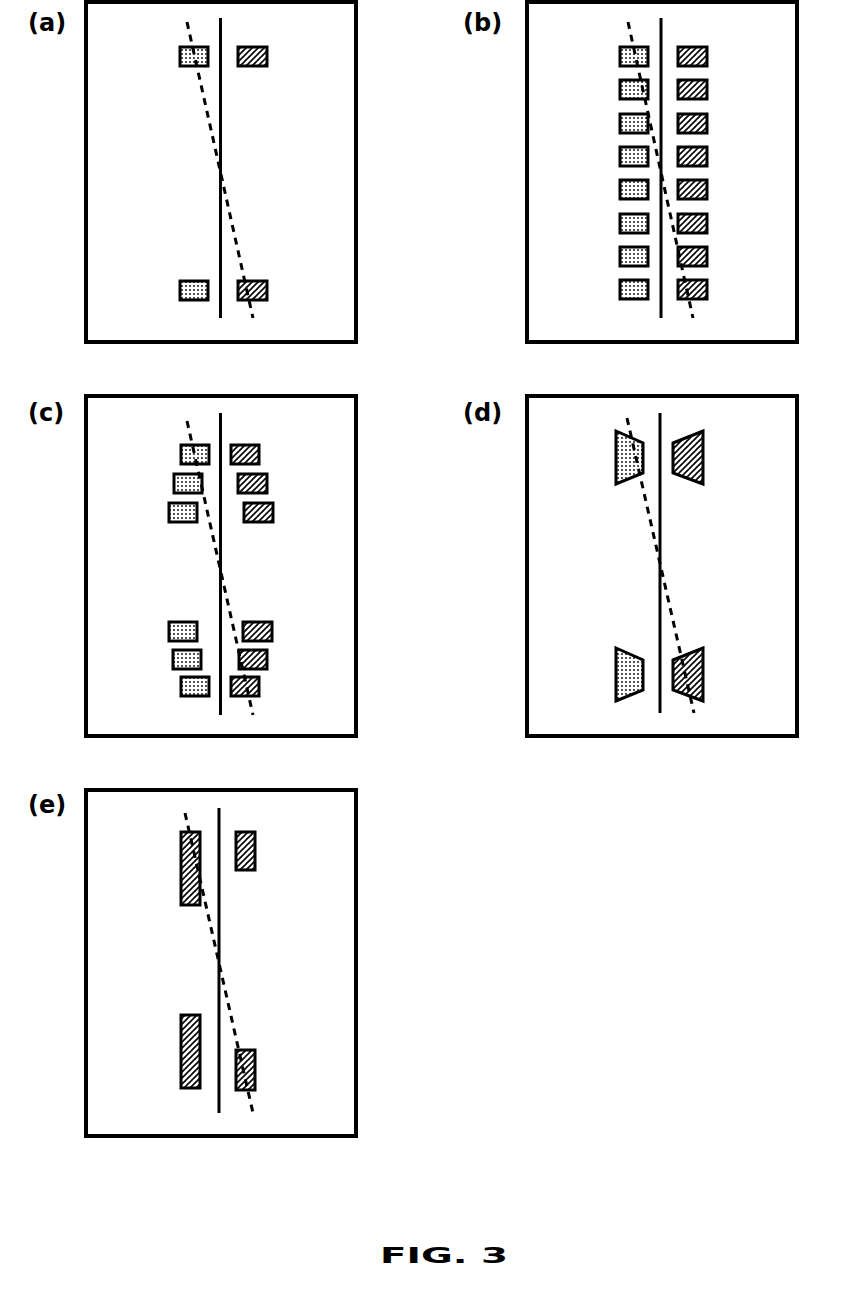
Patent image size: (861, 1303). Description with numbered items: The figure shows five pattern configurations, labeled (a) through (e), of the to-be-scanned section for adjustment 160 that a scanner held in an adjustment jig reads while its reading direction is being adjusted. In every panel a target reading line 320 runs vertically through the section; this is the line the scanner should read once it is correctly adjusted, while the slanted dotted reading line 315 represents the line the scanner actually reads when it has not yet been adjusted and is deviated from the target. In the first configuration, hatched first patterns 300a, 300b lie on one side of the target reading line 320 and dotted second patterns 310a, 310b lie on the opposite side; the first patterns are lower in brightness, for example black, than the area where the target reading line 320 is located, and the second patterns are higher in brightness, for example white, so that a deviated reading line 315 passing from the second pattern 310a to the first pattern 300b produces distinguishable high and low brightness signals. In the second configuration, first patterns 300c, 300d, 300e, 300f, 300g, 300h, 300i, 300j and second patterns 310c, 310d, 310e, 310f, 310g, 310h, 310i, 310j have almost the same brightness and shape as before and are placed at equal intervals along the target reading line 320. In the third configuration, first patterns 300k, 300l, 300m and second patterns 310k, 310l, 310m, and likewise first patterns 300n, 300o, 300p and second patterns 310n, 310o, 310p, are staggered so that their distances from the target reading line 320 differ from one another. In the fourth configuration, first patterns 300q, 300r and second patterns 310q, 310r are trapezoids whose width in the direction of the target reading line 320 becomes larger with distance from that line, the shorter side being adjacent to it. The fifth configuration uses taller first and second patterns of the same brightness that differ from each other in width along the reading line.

The to-be-scanned section for adjustment 160 is at (358, 175).
The reading line 315 is at (235, 236).
The target reading line 320 is at (222, 108).
The first pattern 300a is at (267, 56).
The first pattern 300b is at (267, 290).
The first pattern 300c is at (707, 56).
The first pattern 300d is at (707, 89).
The first pattern 300e is at (707, 123).
The first pattern 300f is at (707, 156).
The first pattern 300g is at (707, 189).
The first pattern 300h is at (707, 223).
The first pattern 300i is at (707, 256).
The first pattern 300j is at (707, 289).
The first pattern 300k is at (259, 454).
The first pattern 300l is at (267, 483).
The first pattern 300m is at (273, 512).
The first pattern 300n is at (272, 631).
The first pattern 300o is at (267, 659).
The first pattern 300p is at (259, 686).
The first pattern 300q is at (703, 457).
The first pattern 300r is at (703, 674).
The second pattern 310a is at (180, 57).
The second pattern 310b is at (180, 291).
The second pattern 310c is at (620, 57).
The second pattern 310d is at (620, 90).
The second pattern 310e is at (620, 124).
The second pattern 310f is at (620, 157).
The second pattern 310g is at (620, 190).
The second pattern 310h is at (620, 224).
The second pattern 310i is at (620, 257).
The second pattern 310j is at (620, 290).
The second pattern 310k is at (181, 455).
The second pattern 310l is at (174, 484).
The second pattern 310m is at (169, 512).
The second pattern 310n is at (169, 632).
The second pattern 310o is at (173, 660).
The second pattern 310p is at (181, 687).
The second pattern 310q is at (616, 458).
The second pattern 310r is at (616, 675).